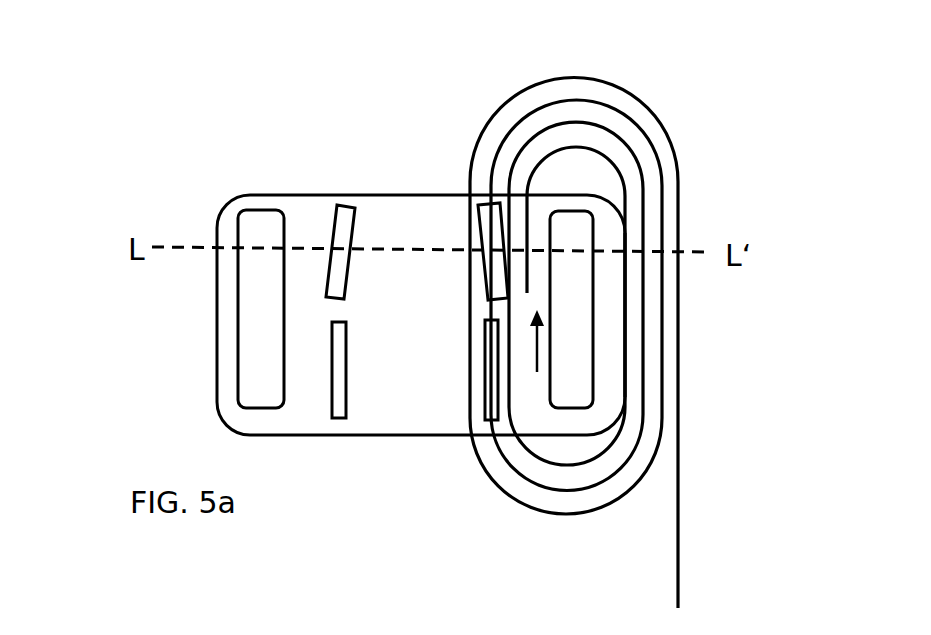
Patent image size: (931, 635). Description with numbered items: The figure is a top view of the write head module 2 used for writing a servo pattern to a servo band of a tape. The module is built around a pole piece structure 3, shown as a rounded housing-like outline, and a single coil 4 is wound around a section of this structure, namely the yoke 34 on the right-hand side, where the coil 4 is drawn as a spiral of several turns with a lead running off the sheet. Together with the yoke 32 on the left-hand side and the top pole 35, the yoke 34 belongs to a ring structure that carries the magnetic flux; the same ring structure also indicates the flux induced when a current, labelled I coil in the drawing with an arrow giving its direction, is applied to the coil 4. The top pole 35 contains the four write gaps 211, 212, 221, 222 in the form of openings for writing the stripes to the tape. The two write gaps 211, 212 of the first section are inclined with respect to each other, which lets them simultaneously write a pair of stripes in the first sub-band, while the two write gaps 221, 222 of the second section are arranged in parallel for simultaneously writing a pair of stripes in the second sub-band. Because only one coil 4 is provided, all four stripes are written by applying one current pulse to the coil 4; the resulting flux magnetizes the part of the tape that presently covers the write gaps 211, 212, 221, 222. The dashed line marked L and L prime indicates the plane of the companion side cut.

The write head module 2 is at (168, 165).
The pole piece structure 3 is at (257, 190).
The coil 4 is at (648, 110).
The yoke 32 is at (265, 352).
The yoke 34 is at (607, 383).
The top pole 35 is at (607, 233).
The write gap 211 is at (345, 220).
The write gap 212 is at (490, 225).
The write gap 221 is at (328, 356).
The write gap 222 is at (492, 395).